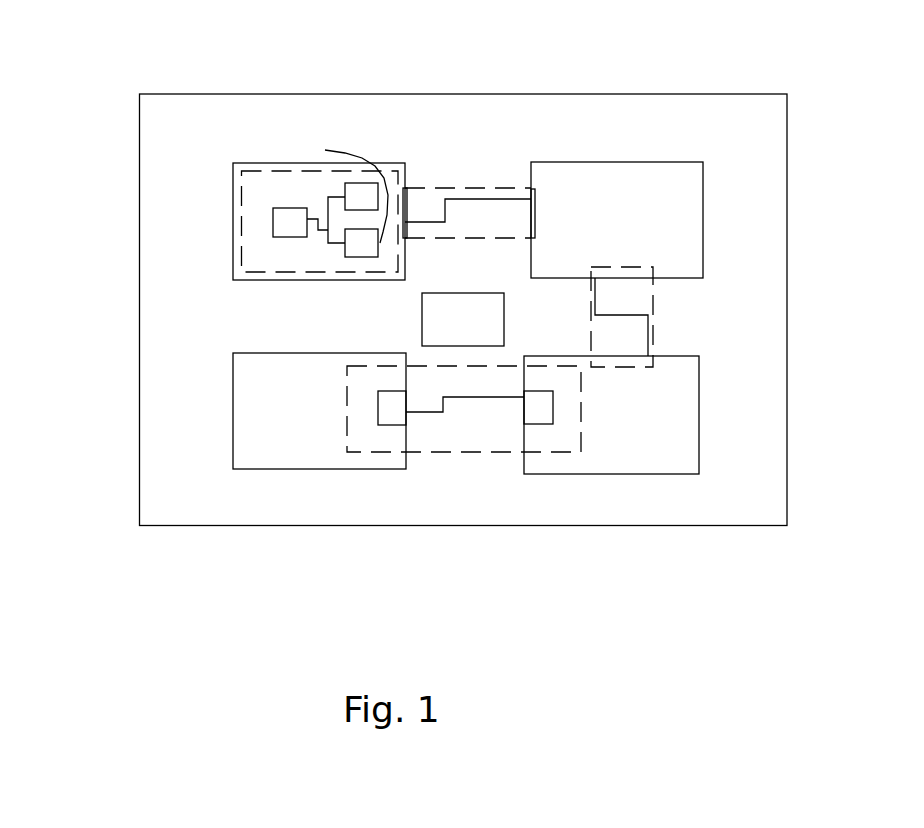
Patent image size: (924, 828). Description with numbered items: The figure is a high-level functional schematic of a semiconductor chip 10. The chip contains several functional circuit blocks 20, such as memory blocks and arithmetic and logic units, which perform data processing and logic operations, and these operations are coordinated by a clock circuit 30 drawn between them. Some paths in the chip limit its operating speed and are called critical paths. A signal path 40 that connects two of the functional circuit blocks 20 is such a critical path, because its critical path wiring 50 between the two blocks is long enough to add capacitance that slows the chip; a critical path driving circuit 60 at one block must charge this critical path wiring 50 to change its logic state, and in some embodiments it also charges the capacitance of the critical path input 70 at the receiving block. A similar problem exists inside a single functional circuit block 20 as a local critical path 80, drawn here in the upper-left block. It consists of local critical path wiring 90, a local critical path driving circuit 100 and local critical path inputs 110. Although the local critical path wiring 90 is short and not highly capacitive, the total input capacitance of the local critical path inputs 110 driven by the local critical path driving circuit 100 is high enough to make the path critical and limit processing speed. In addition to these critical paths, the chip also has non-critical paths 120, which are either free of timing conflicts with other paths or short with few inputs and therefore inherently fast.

The semiconductor chip 10 is at (787, 125).
The functional circuit blocks 20 is at (373, 162).
The clock circuit 30 is at (298, 319).
The signal path 40 is at (580, 452).
The critical path wiring 50 is at (483, 397).
The critical path driving circuit 60 is at (378, 426).
The critical path input 70 is at (553, 410).
The local critical path 80 is at (235, 172).
The local critical path wiring 90 is at (320, 230).
The local critical path driving circuit 100 is at (199, 222).
The local critical path inputs 110 is at (345, 182).
The non-critical paths 120 is at (500, 199).